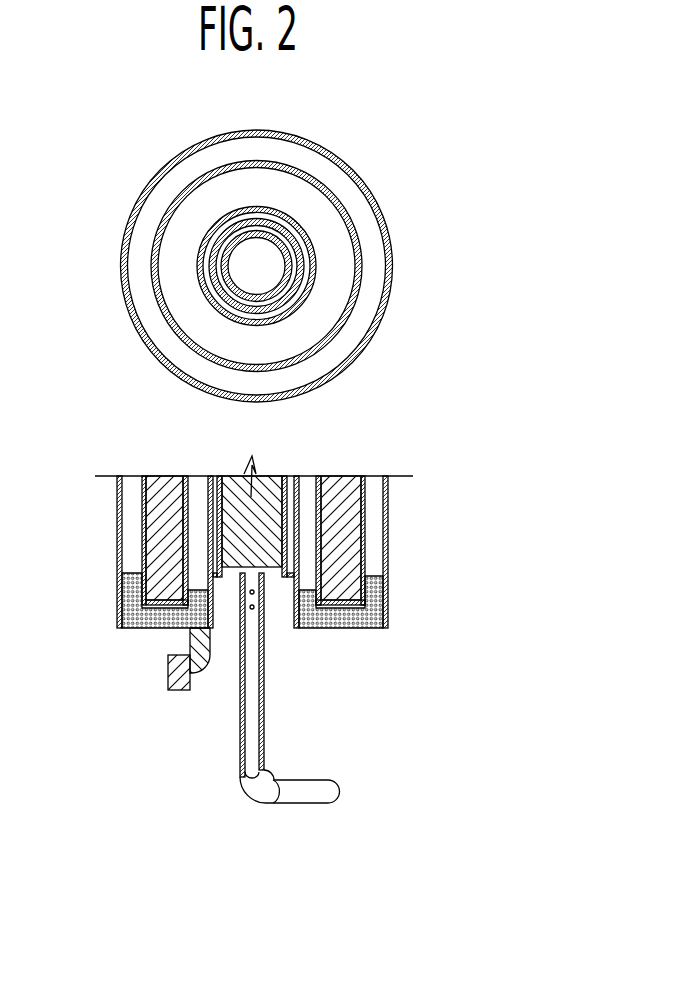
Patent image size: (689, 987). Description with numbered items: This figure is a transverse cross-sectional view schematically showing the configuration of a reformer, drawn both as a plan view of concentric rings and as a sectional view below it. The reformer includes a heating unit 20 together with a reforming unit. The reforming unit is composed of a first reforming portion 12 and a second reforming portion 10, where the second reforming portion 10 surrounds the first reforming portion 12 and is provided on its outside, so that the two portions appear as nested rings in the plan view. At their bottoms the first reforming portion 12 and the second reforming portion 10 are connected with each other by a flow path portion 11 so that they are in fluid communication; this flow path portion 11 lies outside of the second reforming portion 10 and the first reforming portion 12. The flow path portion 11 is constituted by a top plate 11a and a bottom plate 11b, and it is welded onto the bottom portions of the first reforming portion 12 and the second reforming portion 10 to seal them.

The second reforming portion 10 is at (368, 538).
The flow path portion 11 is at (388, 608).
The top plate 11a is at (176, 600).
The bottom plate 11b is at (157, 630).
The first reforming portion 12 is at (283, 218).
The heating unit 20 is at (256, 262).